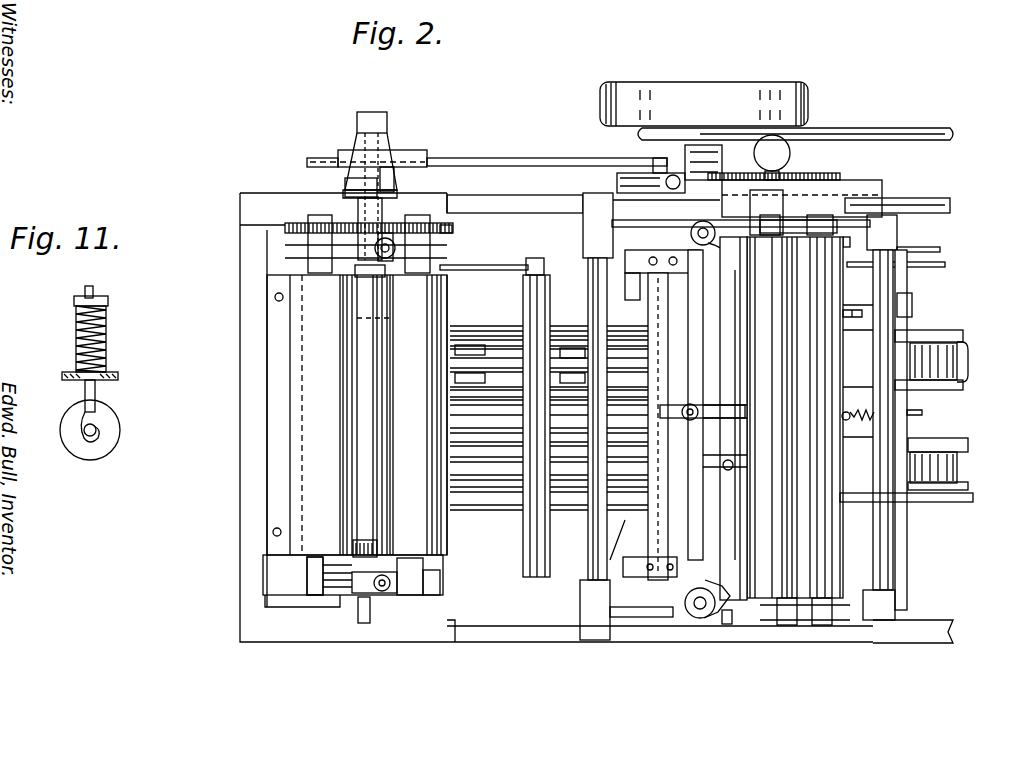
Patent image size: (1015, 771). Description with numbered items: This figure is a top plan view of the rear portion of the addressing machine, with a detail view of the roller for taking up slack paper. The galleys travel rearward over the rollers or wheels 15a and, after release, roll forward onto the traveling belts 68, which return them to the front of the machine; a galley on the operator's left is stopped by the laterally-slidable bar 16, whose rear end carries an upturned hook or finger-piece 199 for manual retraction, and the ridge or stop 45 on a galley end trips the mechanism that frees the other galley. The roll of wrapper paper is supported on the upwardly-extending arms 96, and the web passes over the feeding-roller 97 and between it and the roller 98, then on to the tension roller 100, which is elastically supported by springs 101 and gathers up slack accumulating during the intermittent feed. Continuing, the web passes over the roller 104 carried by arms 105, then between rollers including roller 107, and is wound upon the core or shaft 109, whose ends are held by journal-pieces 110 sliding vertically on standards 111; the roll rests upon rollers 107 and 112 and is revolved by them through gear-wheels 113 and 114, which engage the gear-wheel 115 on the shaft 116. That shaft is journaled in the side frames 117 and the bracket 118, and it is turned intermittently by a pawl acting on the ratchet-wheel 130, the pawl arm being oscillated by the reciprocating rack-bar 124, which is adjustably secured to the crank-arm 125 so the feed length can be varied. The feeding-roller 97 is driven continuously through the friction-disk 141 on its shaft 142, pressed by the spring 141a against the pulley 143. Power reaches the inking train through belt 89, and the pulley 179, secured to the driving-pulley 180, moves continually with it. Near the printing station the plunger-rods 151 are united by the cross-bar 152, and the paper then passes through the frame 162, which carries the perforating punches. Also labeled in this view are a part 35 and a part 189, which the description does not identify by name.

In FIG. 11, the roller 100 is at (113, 420).
In FIG. 11, the springs 101 is at (104, 333).
In FIG. 2, the roller 107 is at (290, 490).
In FIG. 2, the core or shaft 109 is at (384, 520).
In FIG. 2, the roller 112 is at (447, 530).
In FIG. 2, the side frames 117 is at (308, 248).
In FIG. 2, the standards 111 is at (385, 600).
In FIG. 2, the journal-pieces 110 is at (413, 614).
In FIG. 2, the shaft 116 is at (375, 113).
In FIG. 2, the bracket 118 is at (346, 182).
In FIG. 2, the ratchet-wheel 130 is at (398, 192).
In FIG. 2, the rack-bar 124 is at (507, 162).
In FIG. 2, the gear-wheel 113 is at (292, 222).
In FIG. 2, the gear-wheel 115 is at (386, 230).
In FIG. 2, the gear-wheel 114 is at (440, 230).
In FIG. 2, the traveling belts 68 is at (505, 357).
In FIG. 2, the rollers or wheels 15a is at (472, 345).
In FIG. 2, the roller 104 is at (550, 280).
In FIG. 2, the arms 105 is at (468, 268).
In FIG. 2, the arms 96 is at (650, 220).
In FIG. 2, the crank-arm 125 is at (617, 183).
In FIG. 2, the shaft 142 is at (705, 222).
In FIG. 2, the pulley 179 is at (645, 142).
In FIG. 2, the belt 89 is at (892, 130).
In FIG. 2, the driving-pulley 180 is at (810, 100).
In FIG. 2, the block 189 is at (722, 160).
In FIG. 2, the pulley 143 is at (792, 150).
In FIG. 2, the friction-disk 141 is at (838, 176).
In FIG. 2, the spring 141a is at (875, 198).
In FIG. 2, the feeding-roller 97 is at (798, 431).
In FIG. 2, the roller 98 is at (822, 417).
In FIG. 2, the laterally-slidable bar 16 is at (733, 532).
In FIG. 2, the ridge or stop 45 is at (962, 348).
In FIG. 2, the bar 35 is at (933, 393).
In FIG. 2, the cross-bar 152 is at (700, 248).
In FIG. 2, the frame 162 is at (662, 578).
In FIG. 2, the plunger-rods 151 is at (698, 607).
In FIG. 2, the upturned hook or finger-piece 199 is at (713, 610).